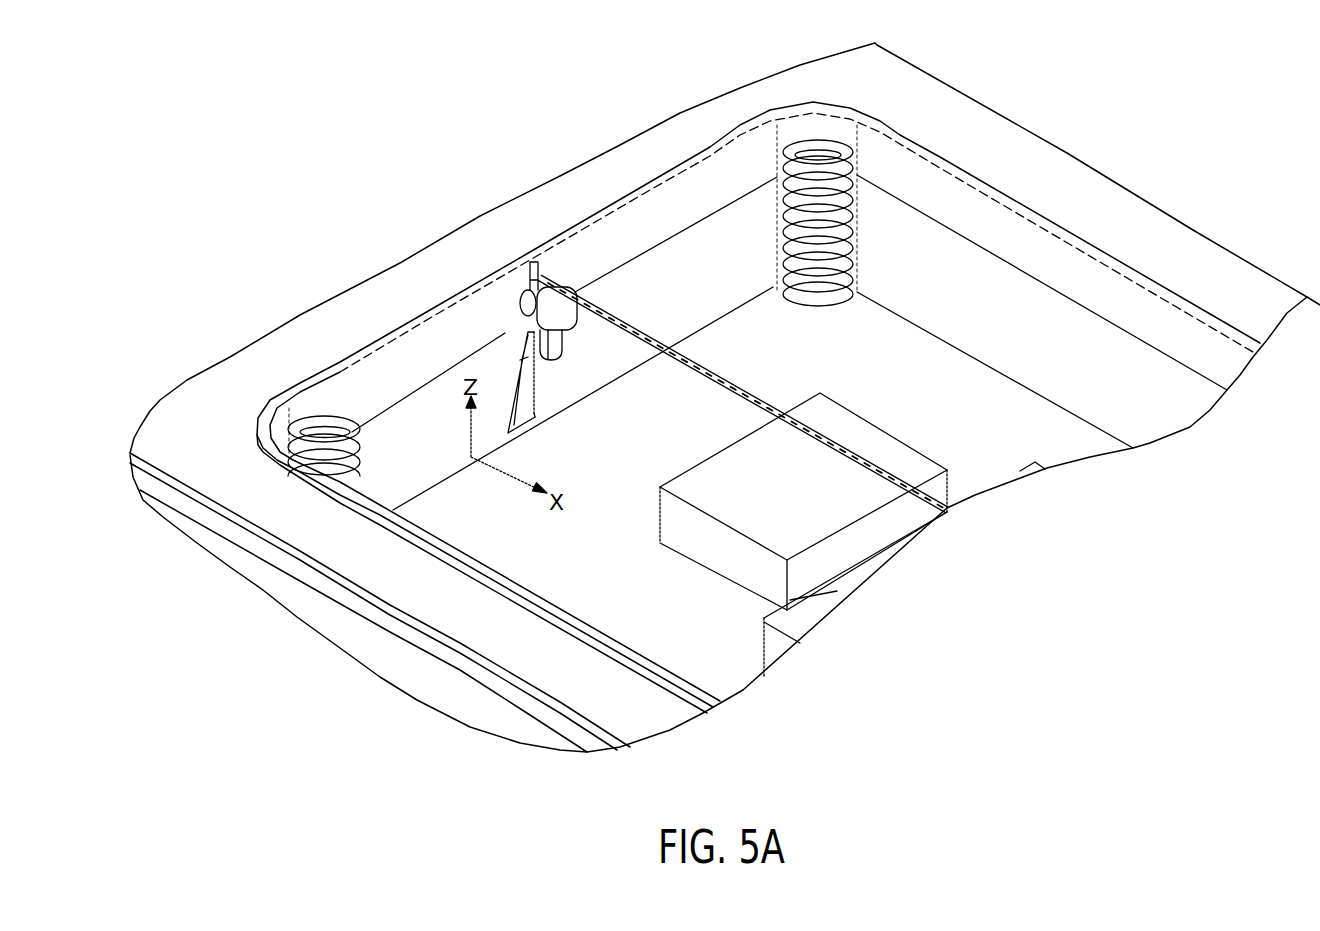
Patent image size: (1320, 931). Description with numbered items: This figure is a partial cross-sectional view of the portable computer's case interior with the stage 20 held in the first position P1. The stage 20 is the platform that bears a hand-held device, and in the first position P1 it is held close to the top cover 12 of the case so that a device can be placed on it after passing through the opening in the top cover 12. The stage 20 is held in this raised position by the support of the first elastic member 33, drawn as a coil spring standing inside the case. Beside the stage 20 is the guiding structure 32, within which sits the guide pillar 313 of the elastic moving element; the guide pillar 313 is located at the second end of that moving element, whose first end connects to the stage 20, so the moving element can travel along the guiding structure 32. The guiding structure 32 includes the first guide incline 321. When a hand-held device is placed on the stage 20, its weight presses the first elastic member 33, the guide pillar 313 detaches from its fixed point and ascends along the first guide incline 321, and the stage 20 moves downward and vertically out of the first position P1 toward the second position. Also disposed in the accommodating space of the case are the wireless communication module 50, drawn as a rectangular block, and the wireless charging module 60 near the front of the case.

The top cover 12 is at (280, 350).
The stage 20 is at (642, 315).
The guide pillar 313 is at (522, 310).
The first guide incline 321 is at (538, 396).
The guiding structure 32 is at (575, 419).
The first elastic member 33 is at (793, 158).
The wireless communication module 50 is at (787, 495).
The wireless charging module 60 is at (765, 622).
The first position P1 is at (466, 116).